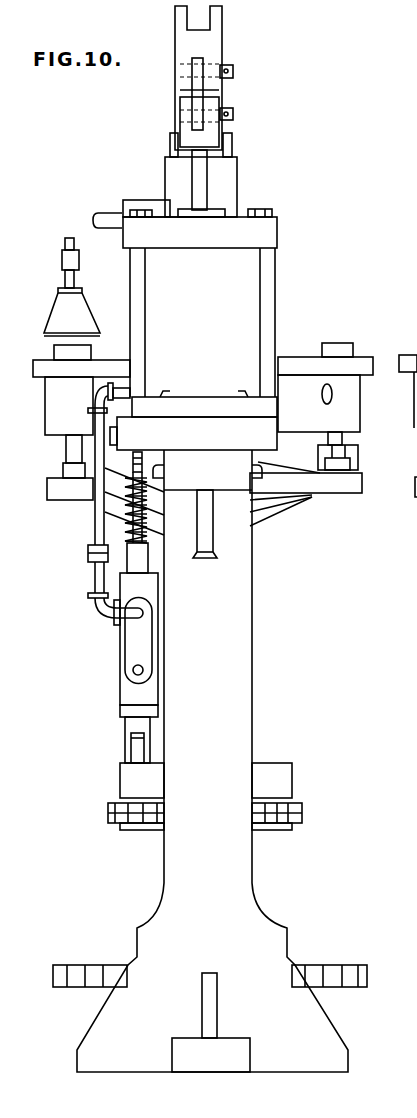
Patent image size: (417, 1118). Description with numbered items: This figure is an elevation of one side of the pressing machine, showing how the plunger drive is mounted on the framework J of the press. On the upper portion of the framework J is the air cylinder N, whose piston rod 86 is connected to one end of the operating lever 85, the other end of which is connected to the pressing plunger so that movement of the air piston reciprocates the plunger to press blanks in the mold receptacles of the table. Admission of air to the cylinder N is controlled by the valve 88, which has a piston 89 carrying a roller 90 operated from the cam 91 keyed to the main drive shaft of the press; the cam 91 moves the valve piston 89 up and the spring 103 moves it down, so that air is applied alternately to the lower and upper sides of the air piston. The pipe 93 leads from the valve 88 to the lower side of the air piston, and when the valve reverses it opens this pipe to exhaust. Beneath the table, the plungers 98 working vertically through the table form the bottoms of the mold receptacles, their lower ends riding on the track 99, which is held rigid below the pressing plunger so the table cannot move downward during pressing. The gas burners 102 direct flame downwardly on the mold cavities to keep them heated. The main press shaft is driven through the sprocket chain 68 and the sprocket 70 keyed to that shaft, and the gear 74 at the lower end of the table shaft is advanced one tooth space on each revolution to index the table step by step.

The operating lever 85 is at (222, 30).
The piston rod 86 is at (203, 185).
The air cylinder N is at (238, 297).
The gas burner 102 is at (52, 310).
The plunger 98 is at (345, 437).
The track 99 is at (338, 472).
The framework J is at (243, 703).
The gear 74 is at (355, 964).
The cam 91 is at (285, 777).
The sprocket chain 68 is at (304, 812).
The sprocket 70 is at (283, 830).
The valve 88 is at (120, 677).
The piston 89 is at (130, 722).
The roller 90 is at (130, 748).
The pipe 93 is at (93, 535).
The spring 103 is at (128, 522).